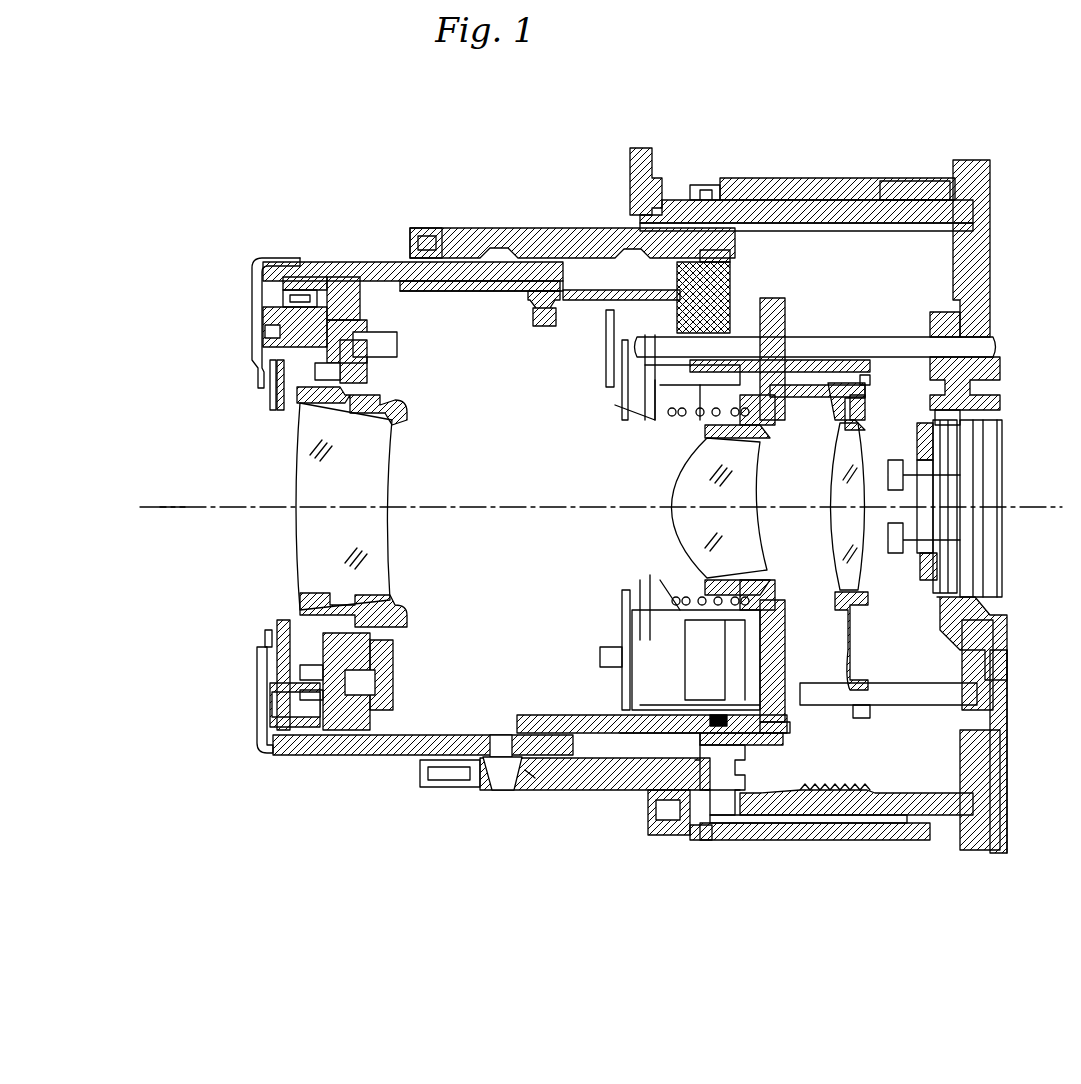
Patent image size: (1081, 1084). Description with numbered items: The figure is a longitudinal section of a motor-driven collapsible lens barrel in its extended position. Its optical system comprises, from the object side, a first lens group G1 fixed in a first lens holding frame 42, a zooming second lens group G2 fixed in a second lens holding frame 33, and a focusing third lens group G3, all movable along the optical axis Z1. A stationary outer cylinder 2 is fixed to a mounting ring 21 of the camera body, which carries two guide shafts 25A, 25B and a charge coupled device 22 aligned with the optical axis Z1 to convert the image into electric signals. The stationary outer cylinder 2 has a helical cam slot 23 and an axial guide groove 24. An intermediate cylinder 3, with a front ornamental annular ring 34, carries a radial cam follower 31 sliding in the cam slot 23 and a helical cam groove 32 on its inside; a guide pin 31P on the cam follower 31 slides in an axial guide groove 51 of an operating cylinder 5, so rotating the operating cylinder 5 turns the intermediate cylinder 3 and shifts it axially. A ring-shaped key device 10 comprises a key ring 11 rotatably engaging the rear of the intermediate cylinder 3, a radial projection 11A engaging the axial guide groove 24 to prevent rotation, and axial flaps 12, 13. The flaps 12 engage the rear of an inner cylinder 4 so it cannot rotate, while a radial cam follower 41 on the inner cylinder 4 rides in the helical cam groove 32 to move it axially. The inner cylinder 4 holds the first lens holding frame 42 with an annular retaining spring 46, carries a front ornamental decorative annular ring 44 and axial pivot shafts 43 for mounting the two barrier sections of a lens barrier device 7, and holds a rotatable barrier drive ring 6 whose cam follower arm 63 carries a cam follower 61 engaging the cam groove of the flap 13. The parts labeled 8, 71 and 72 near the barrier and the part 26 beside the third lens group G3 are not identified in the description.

The stationary outer cylinder 2 is at (640, 147).
The intermediate cylinder 3 is at (490, 227).
The inner cylinder 4 is at (335, 261).
The operating cylinder 5 is at (822, 178).
The barrier drive ring 6 is at (432, 301).
The lens barrier device 7 is at (191, 380).
The decorative ring 8 is at (282, 292).
The ring-shaped key device 10 is at (585, 283).
The key ring 11 is at (776, 255).
The radial projection 11A is at (762, 178).
The axial flap 12 is at (560, 713).
The axial flap 13 is at (582, 302).
The mounting ring 21 is at (992, 242).
The charge coupled device 22 is at (992, 452).
The cam slot 23 is at (755, 841).
The axial guide groove 24 is at (876, 180).
The guide shaft 25A is at (916, 648).
The guide shaft 25B is at (906, 337).
The third lens frame 26 is at (867, 635).
The radial cam follower 31 is at (712, 846).
The guide pin 31P is at (725, 840).
The helical cam groove 32 is at (532, 788).
The second lens holding frame 33 is at (770, 425).
The ornamental annular ring 34 is at (422, 227).
The radial cam follower 41 is at (505, 790).
The first lens holding frame 42 is at (397, 415).
The axial pivot shaft 43 is at (278, 322).
The ornamental decorative annular ring 44 is at (262, 257).
The annular retaining spring 46 is at (300, 645).
The axial guide groove 51 is at (848, 824).
The cam follower 61 is at (525, 310).
The cam follower arm 63 is at (478, 292).
The barrier blade 71 is at (277, 402).
The barrier blade 72 is at (268, 390).
The first lens group G1 is at (305, 535).
The second lens group G2 is at (675, 537).
The third lens group G3 is at (835, 532).
The optical axis Z1 is at (170, 513).